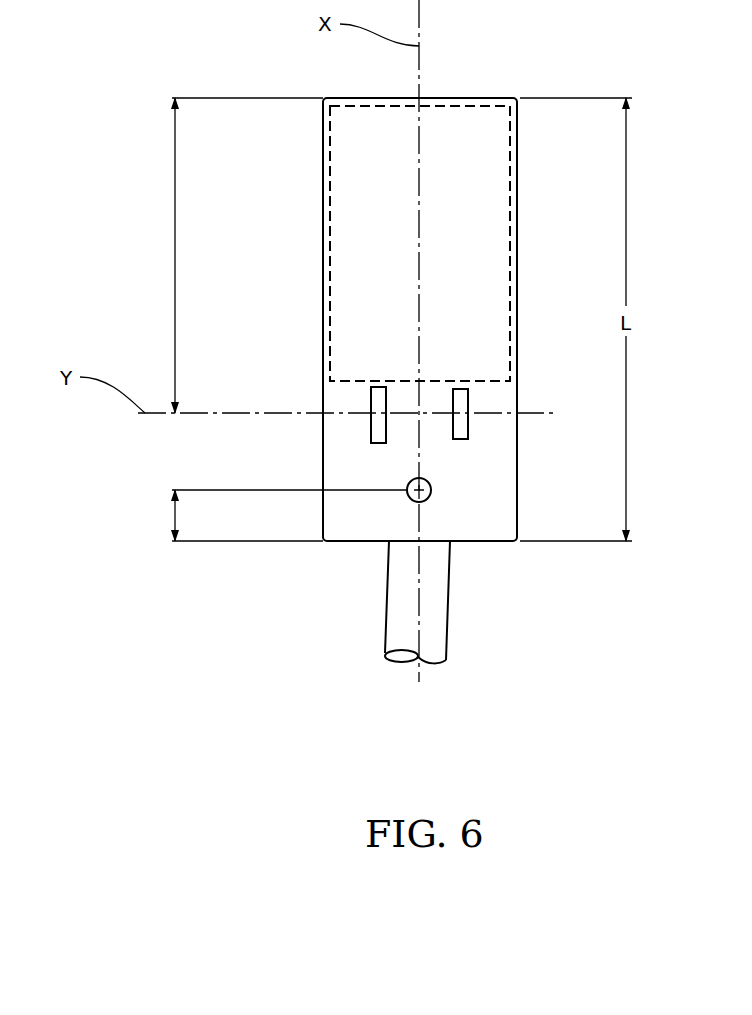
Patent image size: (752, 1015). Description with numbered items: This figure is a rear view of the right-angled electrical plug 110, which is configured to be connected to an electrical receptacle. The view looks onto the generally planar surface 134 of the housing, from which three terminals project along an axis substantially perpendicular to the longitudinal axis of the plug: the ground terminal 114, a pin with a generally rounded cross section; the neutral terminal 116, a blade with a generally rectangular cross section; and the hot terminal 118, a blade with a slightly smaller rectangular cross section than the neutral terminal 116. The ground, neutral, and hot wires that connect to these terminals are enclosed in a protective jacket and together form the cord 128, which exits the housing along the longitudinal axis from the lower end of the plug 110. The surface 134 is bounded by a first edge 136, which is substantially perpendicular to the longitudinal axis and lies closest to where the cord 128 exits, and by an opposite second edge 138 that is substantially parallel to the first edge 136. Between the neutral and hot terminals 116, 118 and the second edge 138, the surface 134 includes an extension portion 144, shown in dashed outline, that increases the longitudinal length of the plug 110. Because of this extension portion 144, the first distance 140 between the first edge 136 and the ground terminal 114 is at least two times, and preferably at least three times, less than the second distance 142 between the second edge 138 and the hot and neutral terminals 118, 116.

The right-angled electrical plug 110 is at (310, 172).
The ground terminal 114 is at (407, 487).
The neutral terminal 116 is at (460, 388).
The hot terminal 118 is at (380, 390).
The cord 128 is at (445, 583).
The planar surface 134 is at (490, 467).
The first edge 136 is at (355, 541).
The second edge 138 is at (487, 98).
The first distance 140 is at (175, 515).
The second distance 142 is at (175, 250).
The extension portion 144 is at (493, 192).